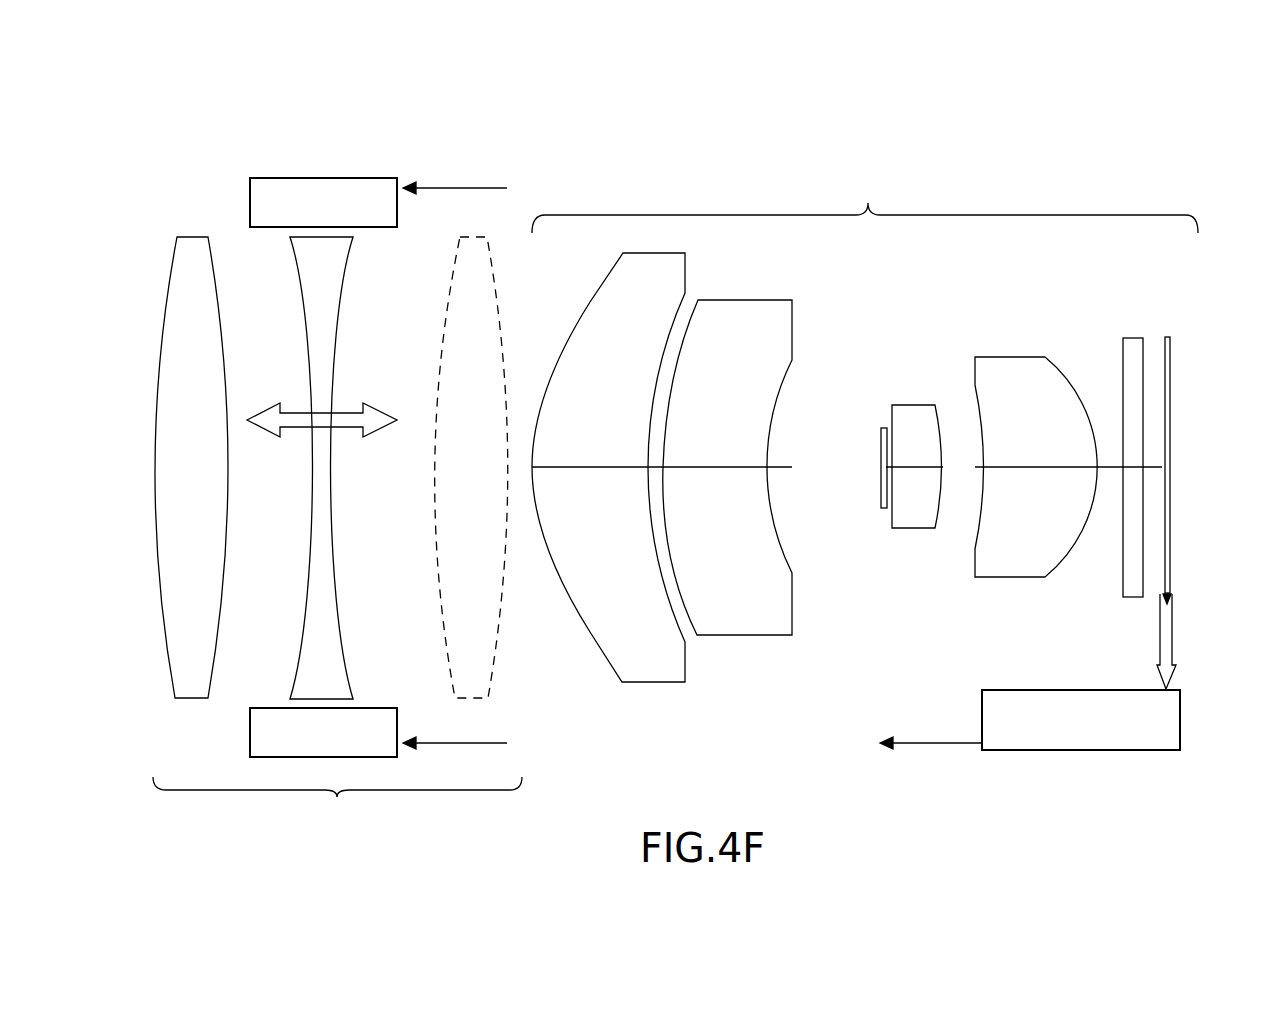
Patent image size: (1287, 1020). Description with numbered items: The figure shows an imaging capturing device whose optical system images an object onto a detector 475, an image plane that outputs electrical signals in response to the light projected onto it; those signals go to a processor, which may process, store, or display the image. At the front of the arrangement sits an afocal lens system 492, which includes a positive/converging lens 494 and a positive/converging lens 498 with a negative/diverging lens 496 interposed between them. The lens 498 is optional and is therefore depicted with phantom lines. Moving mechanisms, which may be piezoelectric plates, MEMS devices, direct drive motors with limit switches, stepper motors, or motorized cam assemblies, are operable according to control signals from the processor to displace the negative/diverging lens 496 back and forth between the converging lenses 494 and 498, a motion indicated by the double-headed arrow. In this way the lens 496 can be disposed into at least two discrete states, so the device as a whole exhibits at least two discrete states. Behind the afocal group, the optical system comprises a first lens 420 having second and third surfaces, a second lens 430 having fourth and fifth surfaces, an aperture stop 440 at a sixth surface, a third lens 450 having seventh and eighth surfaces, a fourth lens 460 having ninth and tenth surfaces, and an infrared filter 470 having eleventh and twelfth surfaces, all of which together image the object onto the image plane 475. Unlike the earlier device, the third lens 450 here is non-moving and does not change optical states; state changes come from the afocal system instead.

The first lens 420 is at (620, 532).
The second lens 430 is at (735, 557).
The aperture stop 440 is at (880, 492).
The third lens 450 is at (937, 499).
The fourth lens 460 is at (1062, 521).
The infrared (IR) filter 470 is at (1133, 346).
The detector 475 is at (1172, 363).
The afocal lens system 492 is at (337, 797).
The positive/converging lens 494 is at (212, 534).
The negative/diverging lens 496 is at (312, 270).
The positive/converging lens 498 is at (492, 544).